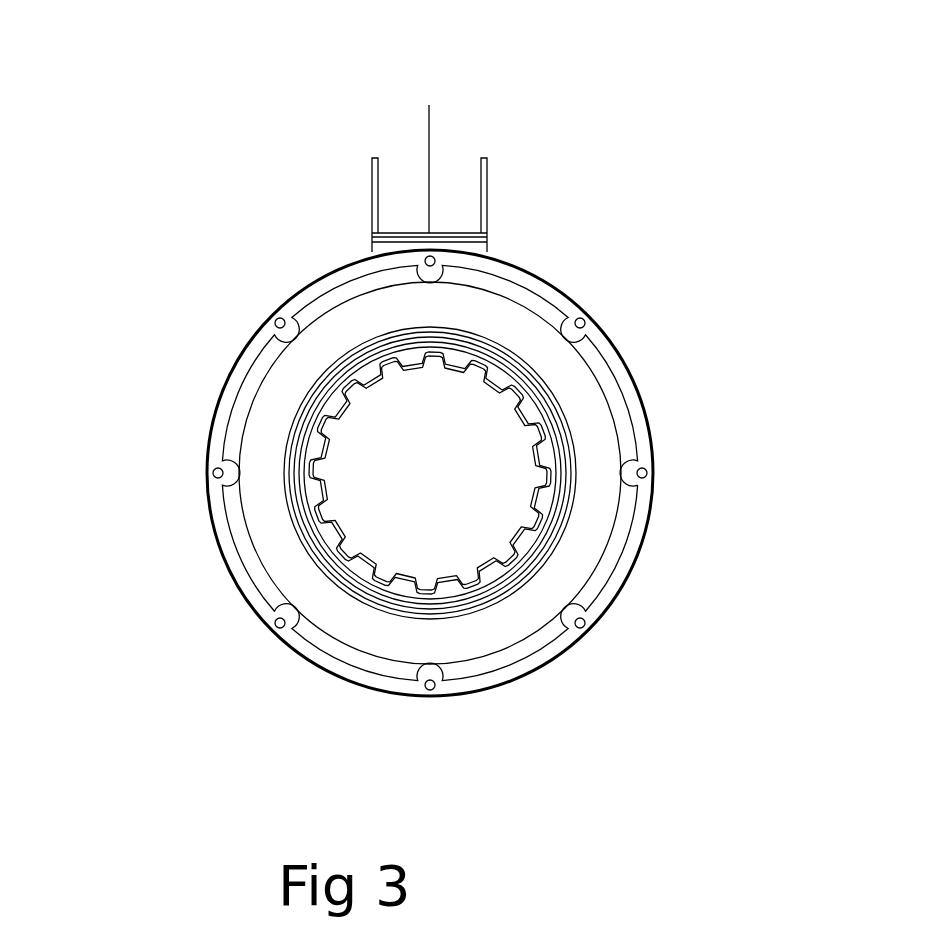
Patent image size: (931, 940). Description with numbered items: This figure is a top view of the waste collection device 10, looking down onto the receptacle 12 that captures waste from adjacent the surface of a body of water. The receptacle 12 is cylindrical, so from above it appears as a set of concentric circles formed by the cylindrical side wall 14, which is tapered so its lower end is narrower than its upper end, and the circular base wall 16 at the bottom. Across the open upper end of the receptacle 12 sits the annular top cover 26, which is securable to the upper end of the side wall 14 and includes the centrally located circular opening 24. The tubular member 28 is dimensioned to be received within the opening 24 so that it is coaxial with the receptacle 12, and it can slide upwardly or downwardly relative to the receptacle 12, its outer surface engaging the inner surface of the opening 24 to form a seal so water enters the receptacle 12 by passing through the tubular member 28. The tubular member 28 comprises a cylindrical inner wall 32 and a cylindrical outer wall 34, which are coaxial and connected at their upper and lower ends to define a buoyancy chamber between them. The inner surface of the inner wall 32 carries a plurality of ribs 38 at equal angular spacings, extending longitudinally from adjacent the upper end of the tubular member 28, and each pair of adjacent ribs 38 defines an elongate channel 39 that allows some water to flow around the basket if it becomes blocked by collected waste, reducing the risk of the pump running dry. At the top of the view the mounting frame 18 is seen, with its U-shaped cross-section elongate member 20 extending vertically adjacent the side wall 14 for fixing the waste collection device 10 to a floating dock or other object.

The waste collection device 10 is at (668, 208).
The receptacle 12 is at (655, 425).
The cylindrical side wall 14 is at (637, 590).
The circular base wall 16 is at (378, 543).
The mounting frame 18 is at (503, 137).
The elongate member 20 is at (370, 190).
The opening 24 is at (302, 545).
The top cover 26 is at (265, 442).
The tubular member 28 is at (318, 378).
The cylindrical inner wall 32 is at (452, 570).
The cylindrical outer wall 34 is at (505, 600).
The ribs 38 is at (513, 410).
The channels 39 is at (543, 417).